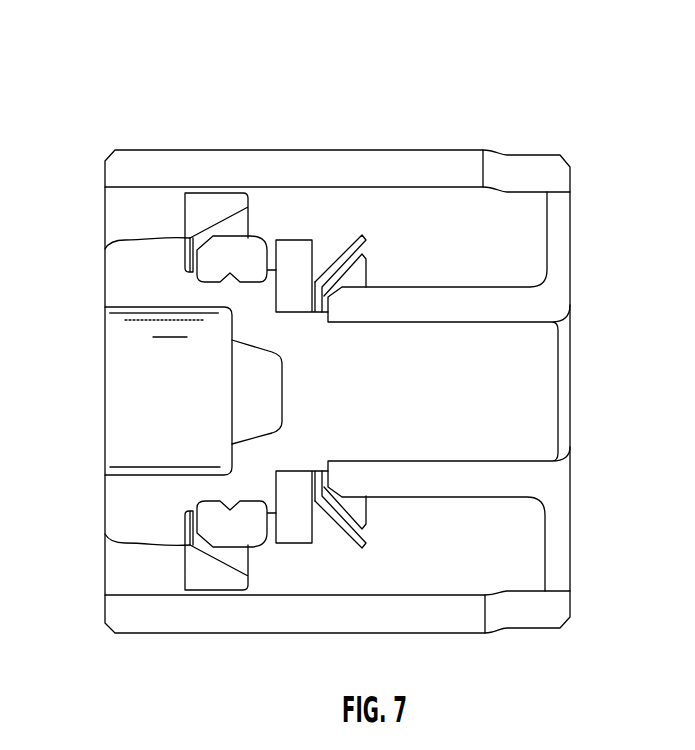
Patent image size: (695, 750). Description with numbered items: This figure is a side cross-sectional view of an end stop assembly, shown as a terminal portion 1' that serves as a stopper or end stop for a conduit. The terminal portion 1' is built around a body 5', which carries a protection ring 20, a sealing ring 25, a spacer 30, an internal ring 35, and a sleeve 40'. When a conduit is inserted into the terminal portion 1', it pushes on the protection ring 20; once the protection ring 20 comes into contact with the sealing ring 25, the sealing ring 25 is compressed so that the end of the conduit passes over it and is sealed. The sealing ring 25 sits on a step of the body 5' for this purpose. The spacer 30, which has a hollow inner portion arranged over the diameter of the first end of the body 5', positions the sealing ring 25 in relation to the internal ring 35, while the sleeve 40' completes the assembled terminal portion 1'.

The terminal portion 1' is at (306, 324).
The body 5' is at (286, 391).
The protection ring 20 is at (215, 203).
The sealing ring 25 is at (250, 242).
The spacer 30 is at (298, 533).
The internal ring 35 is at (362, 547).
The sleeve 40' is at (492, 391).